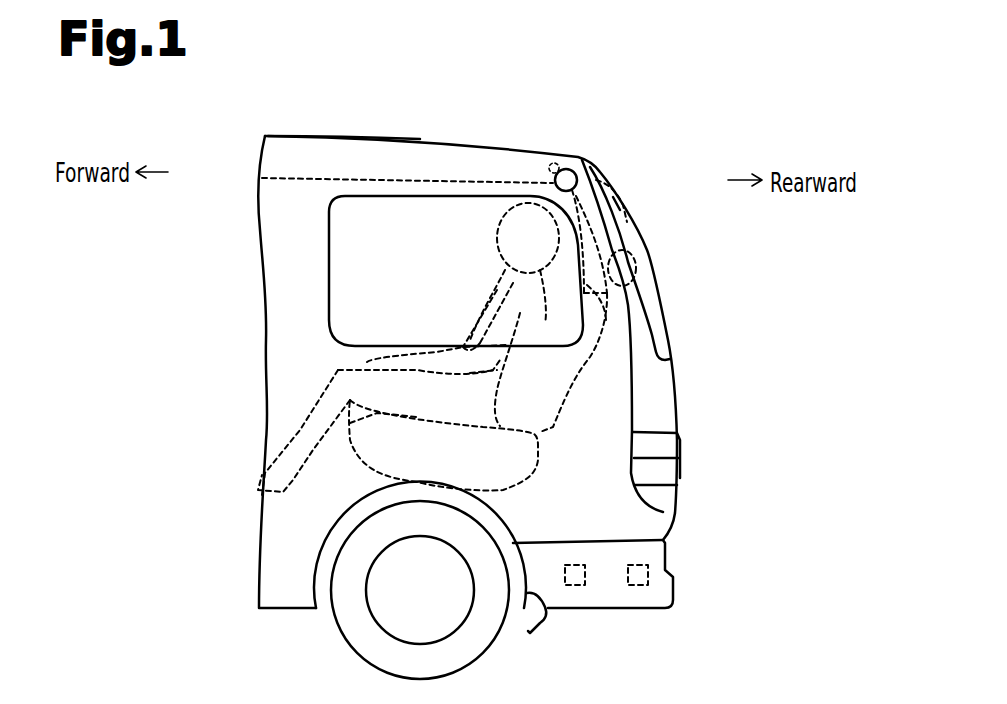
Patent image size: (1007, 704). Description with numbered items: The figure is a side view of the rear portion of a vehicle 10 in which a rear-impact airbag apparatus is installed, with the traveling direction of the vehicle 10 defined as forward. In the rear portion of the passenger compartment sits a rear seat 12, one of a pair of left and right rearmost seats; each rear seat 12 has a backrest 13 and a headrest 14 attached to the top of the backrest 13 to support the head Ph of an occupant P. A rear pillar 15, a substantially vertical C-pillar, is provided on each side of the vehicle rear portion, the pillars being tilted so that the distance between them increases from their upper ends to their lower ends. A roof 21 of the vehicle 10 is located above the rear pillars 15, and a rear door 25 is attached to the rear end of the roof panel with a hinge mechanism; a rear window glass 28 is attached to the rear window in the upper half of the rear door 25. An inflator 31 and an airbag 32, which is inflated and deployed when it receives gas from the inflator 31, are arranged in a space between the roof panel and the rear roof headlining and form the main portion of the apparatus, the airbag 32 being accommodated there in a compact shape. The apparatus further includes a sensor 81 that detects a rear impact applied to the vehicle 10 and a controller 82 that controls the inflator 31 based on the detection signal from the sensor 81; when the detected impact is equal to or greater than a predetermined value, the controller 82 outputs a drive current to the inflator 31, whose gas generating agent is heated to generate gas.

The vehicle 10 is at (675, 525).
The roof 21 is at (293, 135).
The rear door 25 is at (673, 400).
The rear window glass 28 is at (663, 303).
The inflator 31 is at (570, 152).
The airbag 32 is at (627, 188).
The headrest 14 is at (637, 265).
The rear pillar 15 is at (590, 320).
The rear seat 12 is at (563, 382).
The backrest 13 is at (490, 445).
The occupant P is at (470, 323).
The head of occupant Ph is at (497, 208).
The controller 82 is at (573, 590).
The sensor 81 is at (637, 590).